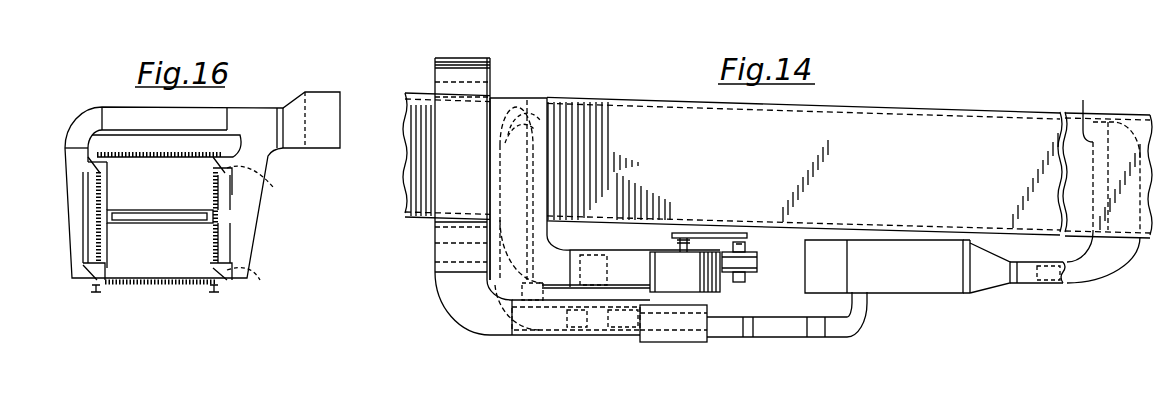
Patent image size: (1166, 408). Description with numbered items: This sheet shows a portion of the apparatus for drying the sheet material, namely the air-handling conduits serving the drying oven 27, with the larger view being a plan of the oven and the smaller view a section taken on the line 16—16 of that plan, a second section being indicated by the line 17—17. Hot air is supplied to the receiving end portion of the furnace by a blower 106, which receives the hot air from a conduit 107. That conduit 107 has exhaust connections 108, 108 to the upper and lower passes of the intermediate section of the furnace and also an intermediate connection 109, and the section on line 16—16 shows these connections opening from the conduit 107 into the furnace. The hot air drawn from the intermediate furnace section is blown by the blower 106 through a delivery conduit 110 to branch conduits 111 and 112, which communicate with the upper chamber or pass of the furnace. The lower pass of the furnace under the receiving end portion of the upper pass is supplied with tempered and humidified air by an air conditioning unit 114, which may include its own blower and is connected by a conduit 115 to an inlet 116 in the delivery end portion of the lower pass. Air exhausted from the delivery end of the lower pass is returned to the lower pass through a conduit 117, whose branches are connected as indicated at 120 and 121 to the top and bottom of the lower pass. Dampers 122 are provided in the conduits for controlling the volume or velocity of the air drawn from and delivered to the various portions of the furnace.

In FIG. 14, the section line 16— 16 is at (423, 32).
In FIG. 14, the section line 17— 17 is at (514, 39).
In FIG. 14, the drying oven 27 is at (777, 165).
In FIG. 14, the blower 106 is at (718, 288).
In FIG. 16, the conduit 107 is at (322, 102).
In FIG. 14, the conduit 107 is at (607, 335).
In FIG. 16, the exhaust connections 108 is at (87, 163).
In FIG. 16, the intermediate connection 109 is at (227, 217).
In FIG. 14, the delivery conduit 110 is at (625, 260).
In FIG. 14, the branch conduit 111 is at (503, 108).
In FIG. 14, the branch conduit 112 is at (528, 103).
In FIG. 14, the air conditioning unit 114 is at (928, 285).
In FIG. 14, the conduit 115 is at (1073, 283).
In FIG. 14, the inlet conduit 116 is at (1083, 93).
In FIG. 14, the conduit 117 is at (725, 333).
In FIG. 14, the connection 120 is at (537, 103).
In FIG. 14, the connection 121 is at (533, 105).
In FIG. 16, the damper 122 is at (265, 227).